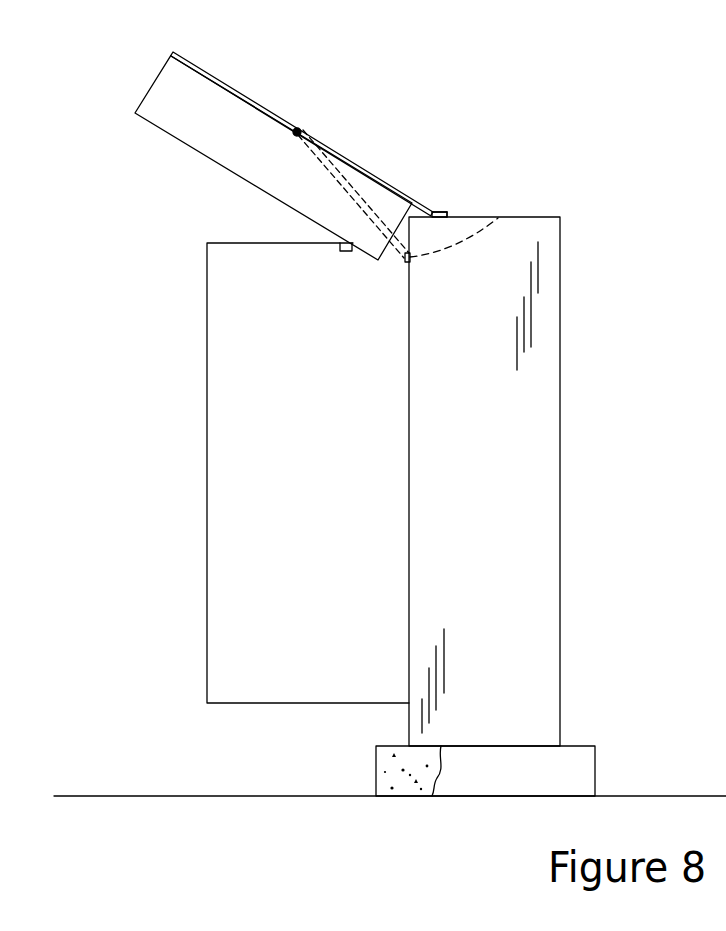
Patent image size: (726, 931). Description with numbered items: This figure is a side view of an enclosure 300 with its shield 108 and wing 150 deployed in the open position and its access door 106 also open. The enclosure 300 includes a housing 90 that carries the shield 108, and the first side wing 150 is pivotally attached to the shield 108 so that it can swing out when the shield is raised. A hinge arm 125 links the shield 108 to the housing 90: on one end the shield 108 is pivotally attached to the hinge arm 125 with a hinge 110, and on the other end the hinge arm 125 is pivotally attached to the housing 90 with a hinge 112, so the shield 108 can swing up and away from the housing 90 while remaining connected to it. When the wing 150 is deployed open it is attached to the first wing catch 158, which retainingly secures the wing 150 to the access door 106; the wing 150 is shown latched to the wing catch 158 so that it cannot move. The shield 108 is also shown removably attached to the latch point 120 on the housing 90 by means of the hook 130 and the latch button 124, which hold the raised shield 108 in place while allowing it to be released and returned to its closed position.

The housing 90 is at (523, 447).
The enclosure 300 is at (570, 567).
The access door 106 is at (207, 545).
The first wing catch 158 is at (343, 252).
The first side wing 150 is at (152, 82).
The shield 108 is at (222, 78).
The hinge 110 is at (299, 128).
The hinge arm 125 is at (332, 168).
The latch point 120 is at (448, 205).
The latch button 124 is at (440, 195).
The hook 130 is at (449, 214).
The hinge 112 is at (498, 218).